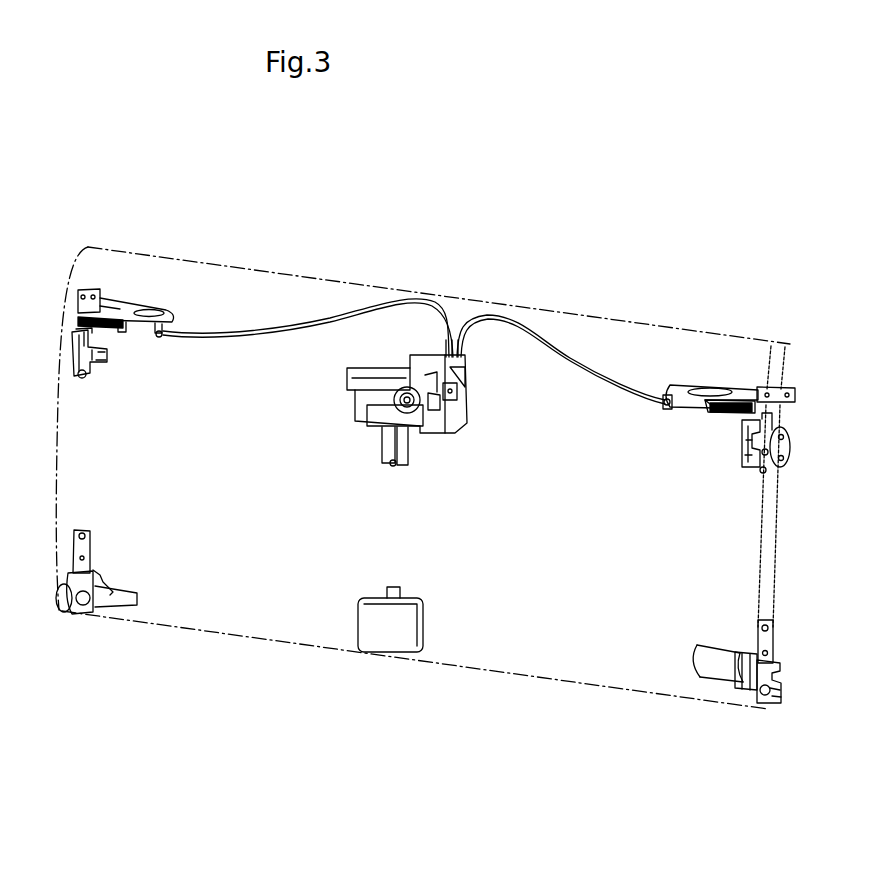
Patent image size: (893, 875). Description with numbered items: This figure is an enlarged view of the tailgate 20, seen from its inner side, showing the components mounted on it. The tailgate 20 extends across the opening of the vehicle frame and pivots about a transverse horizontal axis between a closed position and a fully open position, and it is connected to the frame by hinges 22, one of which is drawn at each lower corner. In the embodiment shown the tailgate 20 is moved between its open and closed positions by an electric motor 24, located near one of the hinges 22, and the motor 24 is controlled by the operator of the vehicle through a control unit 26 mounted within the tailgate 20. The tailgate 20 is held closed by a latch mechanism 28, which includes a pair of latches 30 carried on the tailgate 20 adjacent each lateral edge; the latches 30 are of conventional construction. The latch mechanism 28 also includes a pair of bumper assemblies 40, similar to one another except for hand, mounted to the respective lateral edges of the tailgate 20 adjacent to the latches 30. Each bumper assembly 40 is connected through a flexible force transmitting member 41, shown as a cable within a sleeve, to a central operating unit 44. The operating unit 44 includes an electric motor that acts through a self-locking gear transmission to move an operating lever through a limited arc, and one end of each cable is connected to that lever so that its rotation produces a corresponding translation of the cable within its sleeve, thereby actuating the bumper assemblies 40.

The tailgate 20 is at (652, 338).
The hinges 22 is at (92, 550).
The electric motor 24 is at (718, 657).
The control unit 26 is at (388, 628).
The latch mechanism 28 is at (573, 384).
The latches 30 is at (98, 362).
The bumper assemblies 40 is at (120, 293).
The flexible force transmitting members 41 is at (358, 310).
The operating unit 44 is at (430, 450).